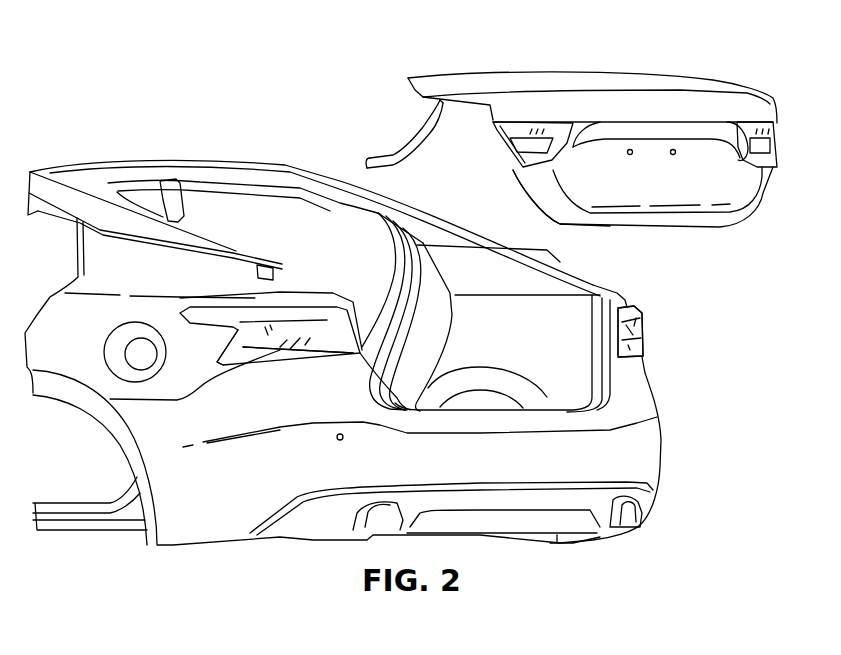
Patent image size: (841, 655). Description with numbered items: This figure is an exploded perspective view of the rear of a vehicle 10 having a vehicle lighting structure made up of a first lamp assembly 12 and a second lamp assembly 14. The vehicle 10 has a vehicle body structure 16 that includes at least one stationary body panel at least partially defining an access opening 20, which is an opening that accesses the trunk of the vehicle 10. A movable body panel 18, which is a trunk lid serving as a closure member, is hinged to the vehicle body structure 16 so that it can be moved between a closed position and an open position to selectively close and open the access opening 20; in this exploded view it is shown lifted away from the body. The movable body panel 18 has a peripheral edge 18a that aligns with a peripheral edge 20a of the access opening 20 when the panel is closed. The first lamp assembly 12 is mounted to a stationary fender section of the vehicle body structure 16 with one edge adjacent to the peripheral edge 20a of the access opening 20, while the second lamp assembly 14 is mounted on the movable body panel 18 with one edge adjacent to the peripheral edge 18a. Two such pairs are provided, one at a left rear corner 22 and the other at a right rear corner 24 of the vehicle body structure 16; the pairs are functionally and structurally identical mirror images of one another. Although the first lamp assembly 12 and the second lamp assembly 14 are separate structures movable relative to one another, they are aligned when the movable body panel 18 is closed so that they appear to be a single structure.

The vehicle 10 is at (160, 78).
The first lamp assembly 12 is at (296, 300).
The second lamp assembly 14 is at (527, 112).
The vehicle body structure 16 is at (135, 157).
The movable body panel 18 is at (781, 197).
The peripheral edge 18a is at (530, 183).
The access opening 20 is at (573, 416).
The peripheral edge 20a is at (380, 380).
The left rear corner 22 is at (262, 368).
The right rear corner 24 is at (644, 330).